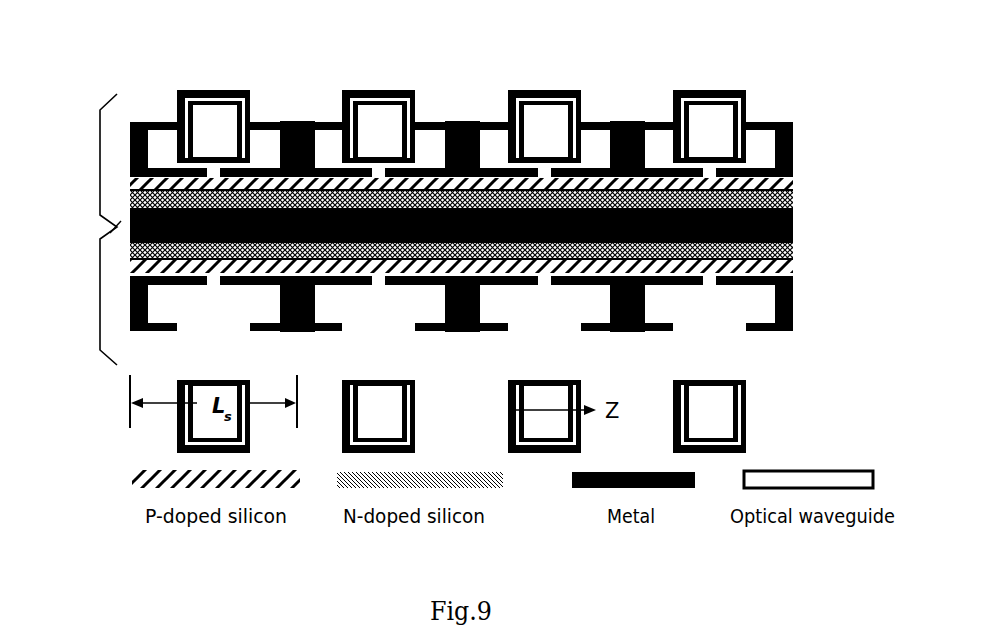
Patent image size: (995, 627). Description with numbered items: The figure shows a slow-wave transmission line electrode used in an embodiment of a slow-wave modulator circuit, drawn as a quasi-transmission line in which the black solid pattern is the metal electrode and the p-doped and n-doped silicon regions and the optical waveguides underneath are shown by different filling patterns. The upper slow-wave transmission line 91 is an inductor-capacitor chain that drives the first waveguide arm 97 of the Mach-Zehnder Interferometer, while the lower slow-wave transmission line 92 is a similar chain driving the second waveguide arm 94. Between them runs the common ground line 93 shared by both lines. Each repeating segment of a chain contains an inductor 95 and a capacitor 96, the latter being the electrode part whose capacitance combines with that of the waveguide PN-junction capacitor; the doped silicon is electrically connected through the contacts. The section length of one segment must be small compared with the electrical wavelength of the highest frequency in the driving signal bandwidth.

The slow-wave transmission line 91 is at (100, 162).
The slow-wave transmission line 92 is at (100, 298).
The common ground line 93 is at (801, 226).
The second waveguide arm 94 is at (801, 263).
The inductor 95 is at (191, 84).
The capacitor 96 is at (297, 114).
The first waveguide arm 97 is at (800, 191).